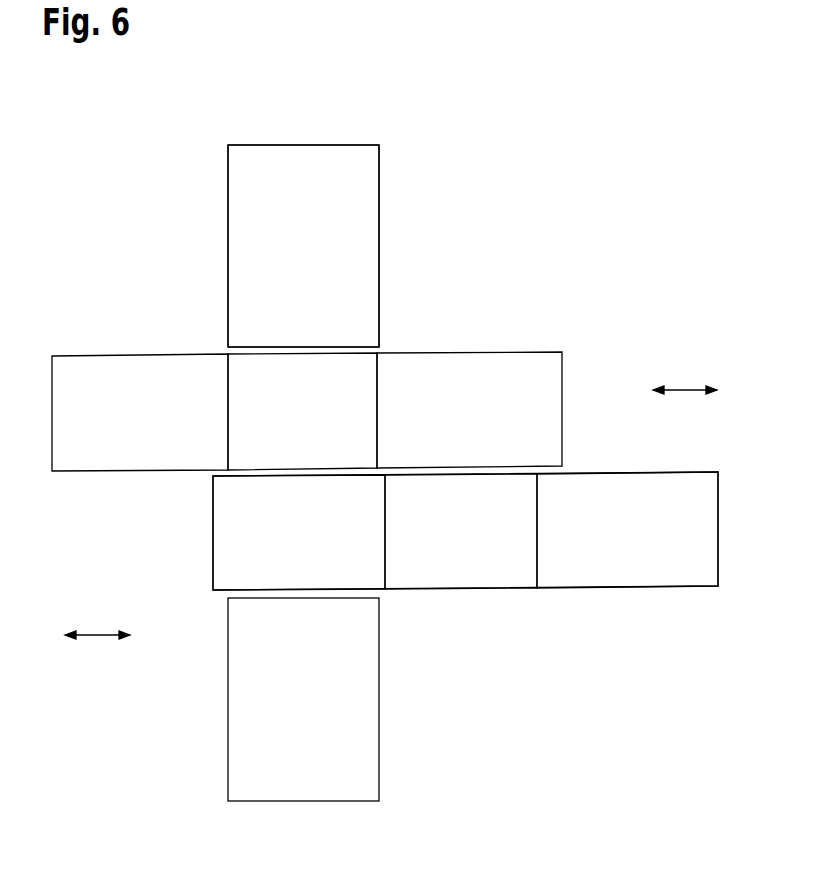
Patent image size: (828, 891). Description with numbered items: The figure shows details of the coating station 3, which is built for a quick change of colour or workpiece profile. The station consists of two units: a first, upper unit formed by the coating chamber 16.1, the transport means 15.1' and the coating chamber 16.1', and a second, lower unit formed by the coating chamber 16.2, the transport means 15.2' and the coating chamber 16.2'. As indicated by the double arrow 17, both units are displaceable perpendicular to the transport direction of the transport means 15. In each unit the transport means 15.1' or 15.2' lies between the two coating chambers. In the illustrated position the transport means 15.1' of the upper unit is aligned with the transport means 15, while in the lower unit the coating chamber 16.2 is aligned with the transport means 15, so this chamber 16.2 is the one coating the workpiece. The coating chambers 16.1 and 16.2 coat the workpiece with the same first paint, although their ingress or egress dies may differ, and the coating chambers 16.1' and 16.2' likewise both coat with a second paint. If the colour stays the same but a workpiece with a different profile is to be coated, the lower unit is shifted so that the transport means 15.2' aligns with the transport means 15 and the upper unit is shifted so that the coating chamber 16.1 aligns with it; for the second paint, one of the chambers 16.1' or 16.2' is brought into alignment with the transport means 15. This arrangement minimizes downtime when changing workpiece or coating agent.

The coating station 3 is at (489, 218).
The transport means 15 is at (302, 155).
The coating chamber 16.1 is at (140, 383).
The transport means 15.1' is at (345, 380).
The coating chamber 16.1' is at (473, 379).
The coating chamber 16.2 is at (335, 565).
The transport means 15.2' is at (467, 565).
The coating chamber 16.2' is at (627, 562).
The double arrow 17 is at (682, 390).